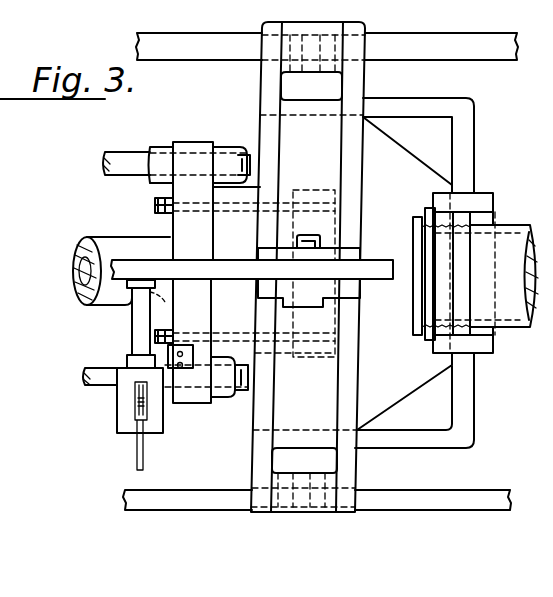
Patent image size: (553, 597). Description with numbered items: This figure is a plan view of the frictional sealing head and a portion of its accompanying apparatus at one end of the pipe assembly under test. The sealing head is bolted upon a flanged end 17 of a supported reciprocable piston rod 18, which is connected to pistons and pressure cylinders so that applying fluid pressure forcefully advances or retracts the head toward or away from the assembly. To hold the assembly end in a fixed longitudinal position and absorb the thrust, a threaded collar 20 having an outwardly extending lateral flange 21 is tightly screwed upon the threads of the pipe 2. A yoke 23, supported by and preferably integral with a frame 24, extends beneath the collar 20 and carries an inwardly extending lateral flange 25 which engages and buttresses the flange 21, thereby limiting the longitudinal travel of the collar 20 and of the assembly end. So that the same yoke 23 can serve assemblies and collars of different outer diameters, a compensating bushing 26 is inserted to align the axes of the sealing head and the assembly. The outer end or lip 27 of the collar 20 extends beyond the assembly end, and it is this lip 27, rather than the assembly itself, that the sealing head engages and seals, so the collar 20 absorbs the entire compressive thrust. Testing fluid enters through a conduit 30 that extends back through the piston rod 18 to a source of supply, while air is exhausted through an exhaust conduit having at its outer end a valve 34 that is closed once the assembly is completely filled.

The pipe 2 is at (500, 328).
The flanged end 17 is at (247, 345).
The piston rod 18 is at (150, 236).
The threaded collar 20 is at (470, 240).
The lateral flange 21 is at (430, 205).
The yoke 23 is at (428, 108).
The frame 24 is at (268, 130).
The lateral flange 25 is at (482, 193).
The compensating bushing 26 is at (505, 200).
The lip 27 is at (413, 218).
The conduit 30 is at (73, 246).
The valve 34 is at (120, 420).